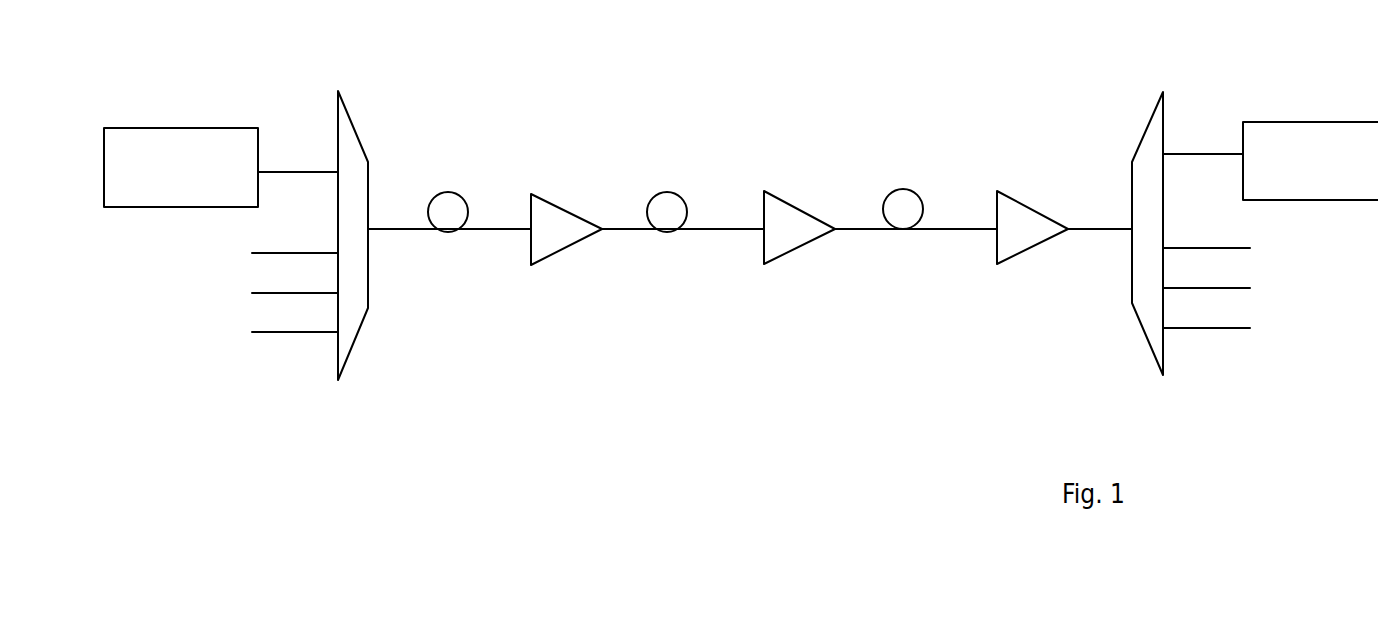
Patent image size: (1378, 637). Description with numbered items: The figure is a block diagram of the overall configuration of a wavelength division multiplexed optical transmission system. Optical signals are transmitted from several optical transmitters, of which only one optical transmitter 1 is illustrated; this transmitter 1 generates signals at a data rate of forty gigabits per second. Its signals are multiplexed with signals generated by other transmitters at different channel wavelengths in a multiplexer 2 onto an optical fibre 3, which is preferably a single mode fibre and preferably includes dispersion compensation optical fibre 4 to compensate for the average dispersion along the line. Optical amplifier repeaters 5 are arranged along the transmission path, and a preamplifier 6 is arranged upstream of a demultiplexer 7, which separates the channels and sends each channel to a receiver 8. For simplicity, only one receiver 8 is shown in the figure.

The optical transmitter 1 is at (157, 127).
The multiplexer 2 is at (363, 138).
The optical fibre 3 is at (452, 191).
The dispersion compensation optical fibre 4 is at (678, 192).
The optical amplifier repeater 5 is at (563, 207).
The preamplifier 6 is at (1040, 210).
The demultiplexer 7 is at (1148, 118).
The receiver 8 is at (1330, 120).